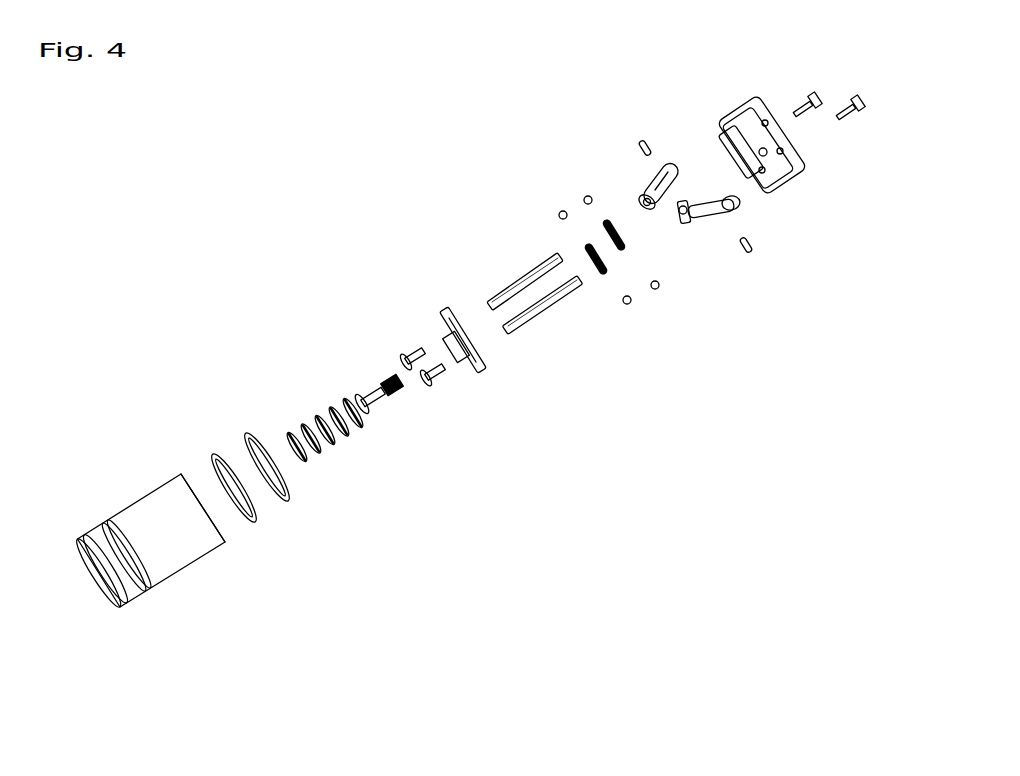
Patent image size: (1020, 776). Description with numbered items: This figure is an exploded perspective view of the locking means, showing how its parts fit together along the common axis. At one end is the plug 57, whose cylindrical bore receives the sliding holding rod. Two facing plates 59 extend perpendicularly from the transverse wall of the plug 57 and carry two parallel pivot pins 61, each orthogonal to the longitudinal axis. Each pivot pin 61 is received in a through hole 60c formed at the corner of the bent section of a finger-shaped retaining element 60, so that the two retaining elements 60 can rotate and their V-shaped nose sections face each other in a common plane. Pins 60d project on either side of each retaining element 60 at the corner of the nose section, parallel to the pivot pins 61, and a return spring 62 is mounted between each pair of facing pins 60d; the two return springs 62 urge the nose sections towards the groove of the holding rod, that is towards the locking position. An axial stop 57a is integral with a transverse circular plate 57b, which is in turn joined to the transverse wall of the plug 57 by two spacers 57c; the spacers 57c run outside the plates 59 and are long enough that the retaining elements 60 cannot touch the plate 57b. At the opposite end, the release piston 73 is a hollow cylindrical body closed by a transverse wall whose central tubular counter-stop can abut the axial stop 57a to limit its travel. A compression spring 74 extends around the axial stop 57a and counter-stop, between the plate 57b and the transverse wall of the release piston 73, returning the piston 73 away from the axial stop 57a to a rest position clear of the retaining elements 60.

The plug 57 is at (805, 213).
The axial stop 57a is at (368, 390).
The transverse circular plate 57b is at (483, 367).
The spacers 57c is at (517, 282).
The facing plates 59 is at (763, 155).
The retaining element 60 is at (649, 249).
The through hole 60c is at (723, 210).
The pins 60d is at (660, 210).
The pivot pin 61 is at (750, 250).
The return spring 62 is at (582, 254).
The release piston 73 is at (195, 560).
The compression spring 74 is at (325, 447).